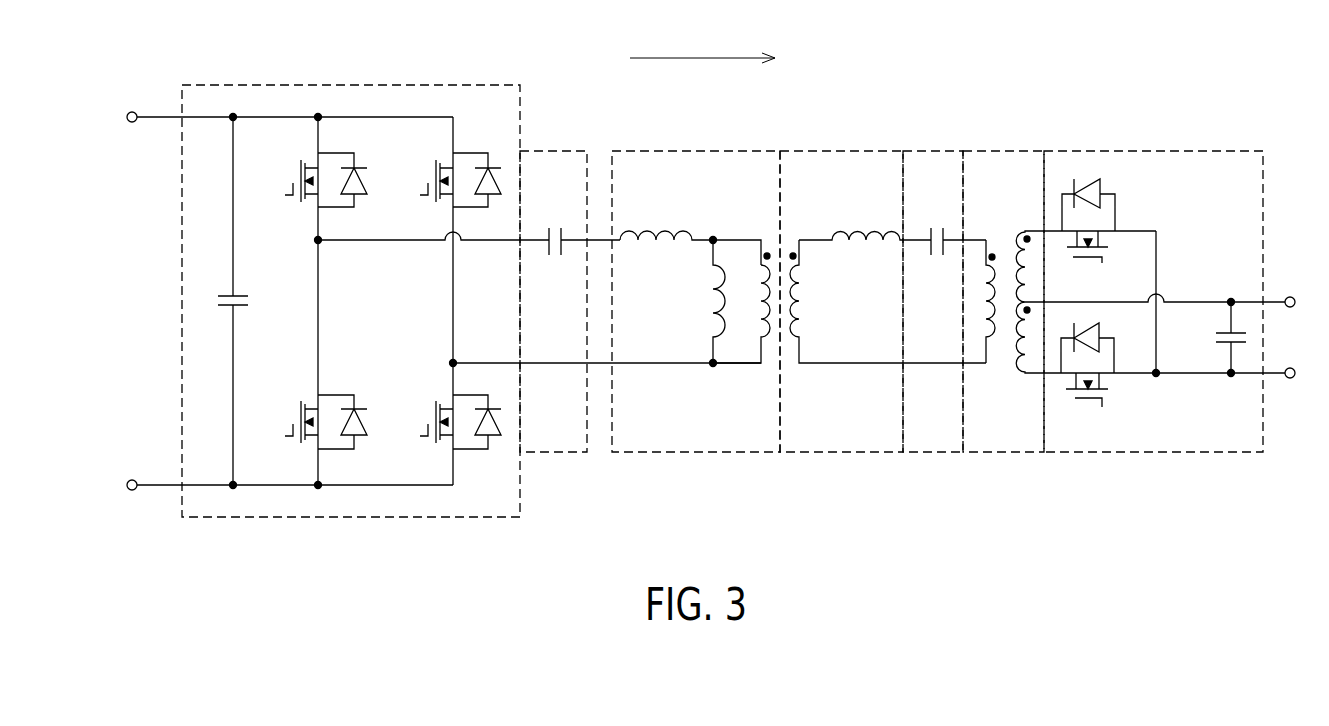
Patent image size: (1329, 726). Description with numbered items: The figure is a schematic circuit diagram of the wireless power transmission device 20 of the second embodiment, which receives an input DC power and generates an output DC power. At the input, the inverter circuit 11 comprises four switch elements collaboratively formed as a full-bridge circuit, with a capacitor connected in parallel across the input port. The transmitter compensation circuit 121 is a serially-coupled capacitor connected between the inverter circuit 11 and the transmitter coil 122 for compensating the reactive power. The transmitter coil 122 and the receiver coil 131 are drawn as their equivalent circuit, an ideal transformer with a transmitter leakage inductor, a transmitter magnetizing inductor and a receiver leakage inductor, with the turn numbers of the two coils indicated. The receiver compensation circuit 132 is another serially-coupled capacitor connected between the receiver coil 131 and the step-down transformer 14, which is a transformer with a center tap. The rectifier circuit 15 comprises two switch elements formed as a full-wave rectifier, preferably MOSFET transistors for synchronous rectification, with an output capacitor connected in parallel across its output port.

The wireless power transmission device 20 is at (1282, 55).
The inverter circuit 11 is at (351, 85).
The transmitter compensation circuit 121 is at (553, 151).
The transmitter coil 122 is at (695, 151).
The receiver coil 131 is at (842, 151).
The receiver compensation circuit 132 is at (935, 151).
The step-down transformer 14 is at (1003, 151).
The rectifier circuit 15 is at (1153, 151).